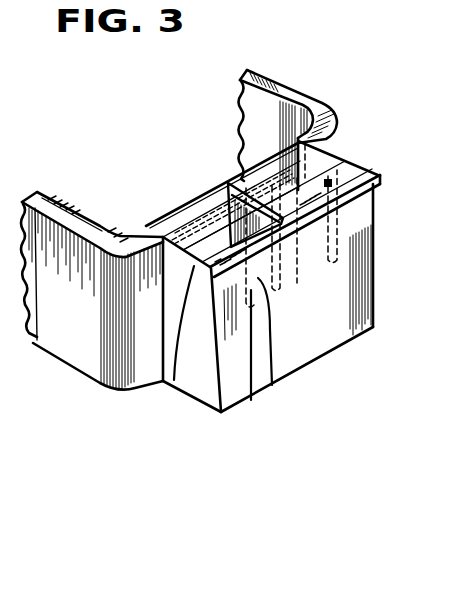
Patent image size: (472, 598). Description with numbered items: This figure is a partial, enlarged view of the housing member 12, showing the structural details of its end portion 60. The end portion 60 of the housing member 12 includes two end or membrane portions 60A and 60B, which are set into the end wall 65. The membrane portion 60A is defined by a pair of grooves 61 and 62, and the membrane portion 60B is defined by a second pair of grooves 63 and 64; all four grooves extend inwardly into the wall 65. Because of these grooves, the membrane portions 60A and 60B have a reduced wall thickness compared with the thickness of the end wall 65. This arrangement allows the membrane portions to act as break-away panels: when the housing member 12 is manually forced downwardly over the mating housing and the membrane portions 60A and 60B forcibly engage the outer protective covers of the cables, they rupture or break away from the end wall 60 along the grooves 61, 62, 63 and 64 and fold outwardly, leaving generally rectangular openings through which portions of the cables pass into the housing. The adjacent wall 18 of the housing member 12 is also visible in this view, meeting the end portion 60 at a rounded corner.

The printed circuit board / panel 12 is at (324, 86).
The housing wall 18 is at (67, 334).
The connector block 60 is at (366, 207).
The block cavities 60A is at (318, 249).
The block rib 60B is at (272, 383).
The retaining clip 61 is at (332, 183).
The block end wall 62 is at (293, 195).
The wedge 63 is at (222, 192).
The groove 64 is at (183, 203).
The side rib 65 is at (174, 380).